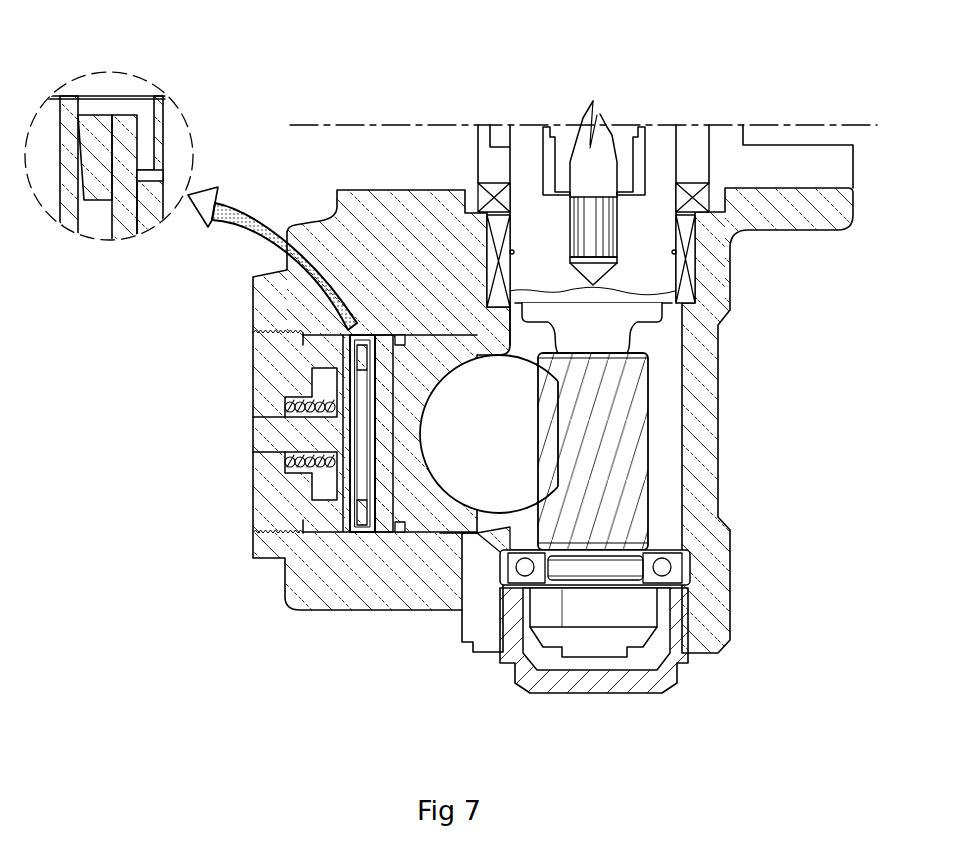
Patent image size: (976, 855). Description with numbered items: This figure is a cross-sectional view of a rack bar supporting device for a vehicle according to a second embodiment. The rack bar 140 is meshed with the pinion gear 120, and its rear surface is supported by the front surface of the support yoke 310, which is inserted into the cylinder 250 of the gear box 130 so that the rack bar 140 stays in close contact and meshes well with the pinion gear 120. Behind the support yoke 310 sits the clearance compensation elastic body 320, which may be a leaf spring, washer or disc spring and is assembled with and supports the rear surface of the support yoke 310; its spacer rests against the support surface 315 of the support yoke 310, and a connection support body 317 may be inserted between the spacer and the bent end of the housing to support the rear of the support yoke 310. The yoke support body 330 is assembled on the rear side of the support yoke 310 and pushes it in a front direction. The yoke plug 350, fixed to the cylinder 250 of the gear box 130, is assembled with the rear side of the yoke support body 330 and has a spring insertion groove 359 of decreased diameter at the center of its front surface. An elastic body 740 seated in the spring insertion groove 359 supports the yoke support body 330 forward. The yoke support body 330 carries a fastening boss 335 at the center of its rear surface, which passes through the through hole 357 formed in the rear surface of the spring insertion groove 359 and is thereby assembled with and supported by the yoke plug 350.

The pinion gear 120 is at (637, 407).
The gear box 130 is at (314, 222).
The rack bar 140 is at (512, 412).
The cylinder 250 is at (400, 533).
The support yoke 310 is at (453, 520).
The support surface 315 is at (163, 181).
The connection support body 317 is at (383, 520).
The clearance compensation elastic body 320 is at (338, 520).
The yoke support body 330 is at (330, 520).
The fastening boss 335 is at (262, 433).
The yoke plug 350 is at (263, 513).
The through hole 357 is at (268, 417).
The spring insertion groove 359 is at (273, 457).
The elastic body 740 is at (297, 400).